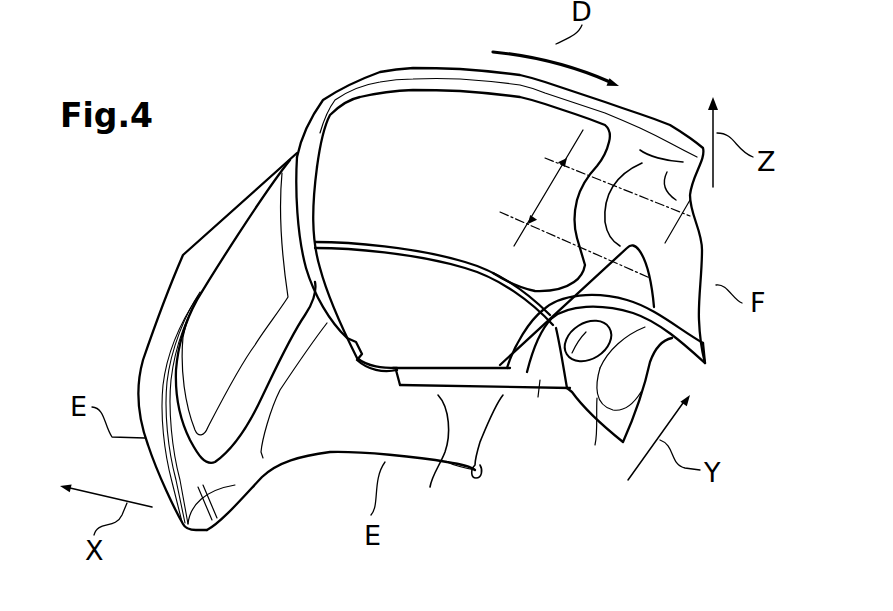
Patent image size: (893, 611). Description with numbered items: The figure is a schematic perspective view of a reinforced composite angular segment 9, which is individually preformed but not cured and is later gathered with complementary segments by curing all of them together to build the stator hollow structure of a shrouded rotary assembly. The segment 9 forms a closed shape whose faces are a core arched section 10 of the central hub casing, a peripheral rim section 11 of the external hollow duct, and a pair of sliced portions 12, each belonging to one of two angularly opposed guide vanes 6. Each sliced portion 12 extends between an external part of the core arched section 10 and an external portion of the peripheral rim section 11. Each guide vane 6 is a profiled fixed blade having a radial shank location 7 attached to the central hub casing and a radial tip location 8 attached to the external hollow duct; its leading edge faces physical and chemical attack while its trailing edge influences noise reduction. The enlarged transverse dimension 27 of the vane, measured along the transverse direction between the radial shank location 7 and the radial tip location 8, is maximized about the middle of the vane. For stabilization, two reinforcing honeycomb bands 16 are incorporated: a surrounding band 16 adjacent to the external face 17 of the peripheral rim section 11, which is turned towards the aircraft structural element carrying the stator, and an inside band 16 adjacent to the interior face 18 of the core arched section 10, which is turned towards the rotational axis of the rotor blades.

The peripheral rim section 11 is at (415, 89).
The composite angular segment 9 is at (277, 172).
The reinforcing honeycomb band 16 is at (238, 250).
The enlarged transverse dimension 27 is at (554, 200).
The guide vane 6 is at (508, 392).
The sliced portion 12 is at (700, 243).
The radial shank location 7 is at (700, 330).
The core arched section 10 is at (578, 400).
The radial tip location 8 is at (438, 381).
The interior face 18 is at (482, 450).
The external face 17 is at (190, 527).